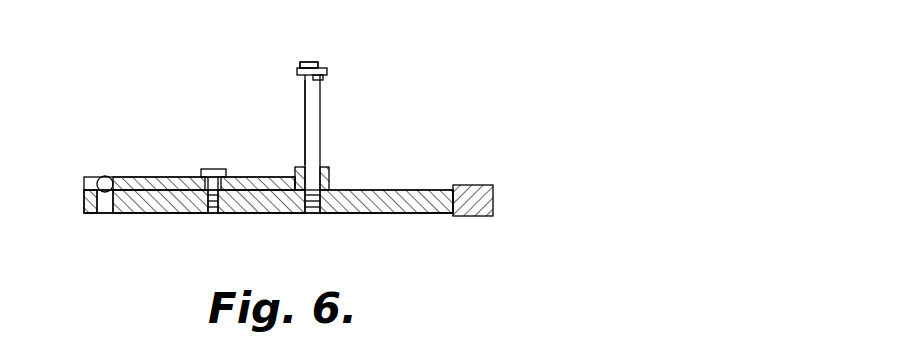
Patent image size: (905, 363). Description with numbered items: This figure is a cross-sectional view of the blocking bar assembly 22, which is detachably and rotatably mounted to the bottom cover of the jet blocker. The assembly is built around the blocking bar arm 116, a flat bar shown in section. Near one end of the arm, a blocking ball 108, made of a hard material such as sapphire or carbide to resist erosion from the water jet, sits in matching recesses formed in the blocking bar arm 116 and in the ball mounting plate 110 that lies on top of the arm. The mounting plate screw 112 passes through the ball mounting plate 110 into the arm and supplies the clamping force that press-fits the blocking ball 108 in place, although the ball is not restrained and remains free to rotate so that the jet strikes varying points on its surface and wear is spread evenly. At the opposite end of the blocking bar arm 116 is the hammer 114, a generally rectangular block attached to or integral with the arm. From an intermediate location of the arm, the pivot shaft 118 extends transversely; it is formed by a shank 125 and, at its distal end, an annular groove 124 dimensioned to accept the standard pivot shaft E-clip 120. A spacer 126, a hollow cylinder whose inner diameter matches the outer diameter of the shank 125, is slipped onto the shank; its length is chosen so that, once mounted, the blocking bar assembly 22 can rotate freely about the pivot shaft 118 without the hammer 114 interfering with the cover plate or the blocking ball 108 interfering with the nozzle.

The blocking bar assembly 22 is at (71, 226).
The blocking ball 108 is at (102, 176).
The ball mounting plate 110 is at (160, 178).
The mounting plate screw 112 is at (210, 169).
The hammer 114 is at (494, 196).
The blocking bar arm 116 is at (296, 214).
The pivot shaft 118 is at (331, 114).
The pivot shaft E-clip 120 is at (298, 71).
The annular groove 124 is at (323, 78).
The shank 125 is at (305, 120).
The spacer 126 is at (318, 63).